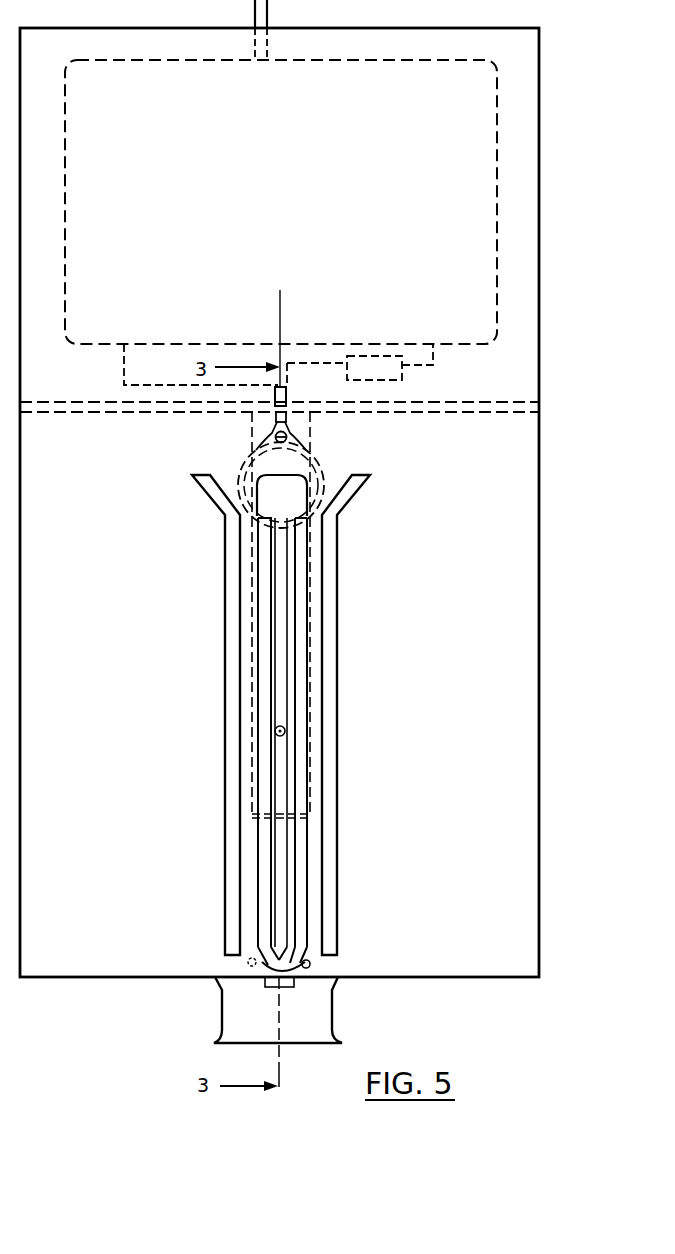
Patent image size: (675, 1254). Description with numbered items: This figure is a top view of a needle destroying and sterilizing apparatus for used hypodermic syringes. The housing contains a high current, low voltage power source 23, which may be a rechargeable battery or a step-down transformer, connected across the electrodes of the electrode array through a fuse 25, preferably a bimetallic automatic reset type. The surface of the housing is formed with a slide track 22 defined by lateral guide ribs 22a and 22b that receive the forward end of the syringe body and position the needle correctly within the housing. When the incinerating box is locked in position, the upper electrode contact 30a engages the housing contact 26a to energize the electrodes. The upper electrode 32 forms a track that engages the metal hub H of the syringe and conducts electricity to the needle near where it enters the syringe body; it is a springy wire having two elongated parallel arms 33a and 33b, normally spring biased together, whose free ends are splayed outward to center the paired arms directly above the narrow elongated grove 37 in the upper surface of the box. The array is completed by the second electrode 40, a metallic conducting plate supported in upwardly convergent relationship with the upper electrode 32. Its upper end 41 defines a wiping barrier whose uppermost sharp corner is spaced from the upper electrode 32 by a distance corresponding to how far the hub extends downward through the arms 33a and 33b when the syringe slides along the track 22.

The power source 23 is at (488, 144).
The fuse 25 is at (402, 379).
The contact 26a is at (287, 398).
The upper electrode contact 30a is at (272, 422).
The second electrode 40 is at (296, 480).
The slide track 22 is at (313, 580).
The lateral guide rib 22a is at (330, 608).
The lateral guide rib 22b is at (200, 715).
The narrow elongated grove 37 is at (279, 535).
The metal hub H is at (284, 727).
The upper electrode 32 is at (306, 752).
The conducting arm 33a is at (270, 785).
The conducting arm 33b is at (290, 797).
The upper end 41 is at (280, 819).